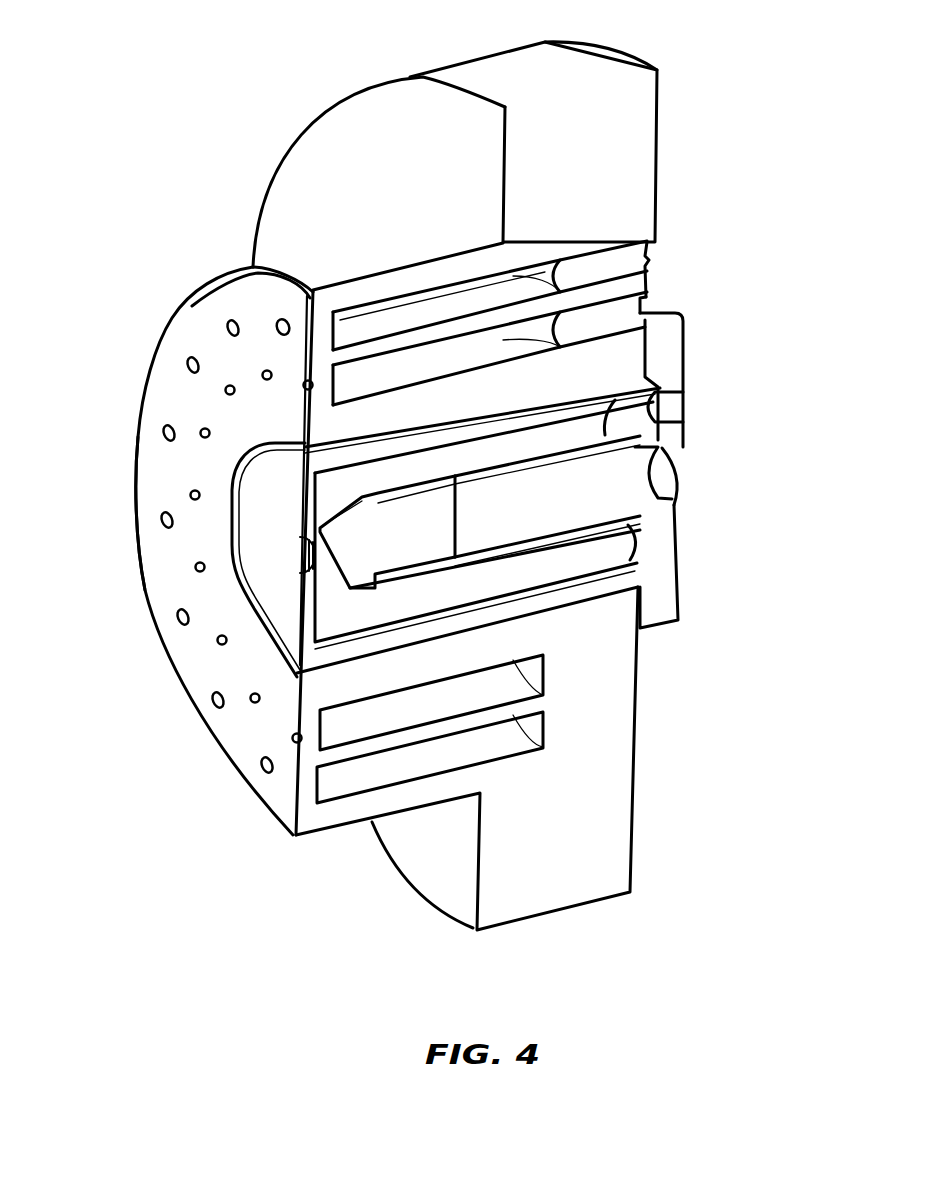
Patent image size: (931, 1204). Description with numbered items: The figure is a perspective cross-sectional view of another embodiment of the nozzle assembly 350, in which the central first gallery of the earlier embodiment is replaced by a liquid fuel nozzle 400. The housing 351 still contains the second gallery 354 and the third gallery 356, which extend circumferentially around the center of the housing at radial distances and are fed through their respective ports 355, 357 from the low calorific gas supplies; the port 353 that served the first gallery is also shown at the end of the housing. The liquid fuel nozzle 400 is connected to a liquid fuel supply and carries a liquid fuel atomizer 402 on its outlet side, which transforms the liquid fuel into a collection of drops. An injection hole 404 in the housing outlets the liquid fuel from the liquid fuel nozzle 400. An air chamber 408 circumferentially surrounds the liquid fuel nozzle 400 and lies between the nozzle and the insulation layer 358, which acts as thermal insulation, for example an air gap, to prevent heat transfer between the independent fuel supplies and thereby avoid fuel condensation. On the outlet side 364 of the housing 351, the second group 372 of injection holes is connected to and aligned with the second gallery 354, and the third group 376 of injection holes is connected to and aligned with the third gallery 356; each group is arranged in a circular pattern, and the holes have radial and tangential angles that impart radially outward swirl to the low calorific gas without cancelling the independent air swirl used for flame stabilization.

The nozzle assembly 350 is at (191, 85).
The housing 351 is at (633, 137).
The port 353 is at (660, 487).
The second gallery 354 is at (432, 365).
The port 355 is at (650, 300).
The third gallery 356 is at (510, 283).
The port 357 is at (648, 262).
The insulation layer 358 is at (653, 375).
The outlet side 364 is at (266, 802).
The second group of injection holes 372 is at (198, 492).
The third group of injection holes 376 is at (276, 325).
The liquid fuel nozzle 400 is at (549, 518).
The liquid fuel atomizer 402 is at (400, 545).
The injection hole 404 is at (298, 560).
The air chamber 408 is at (456, 472).